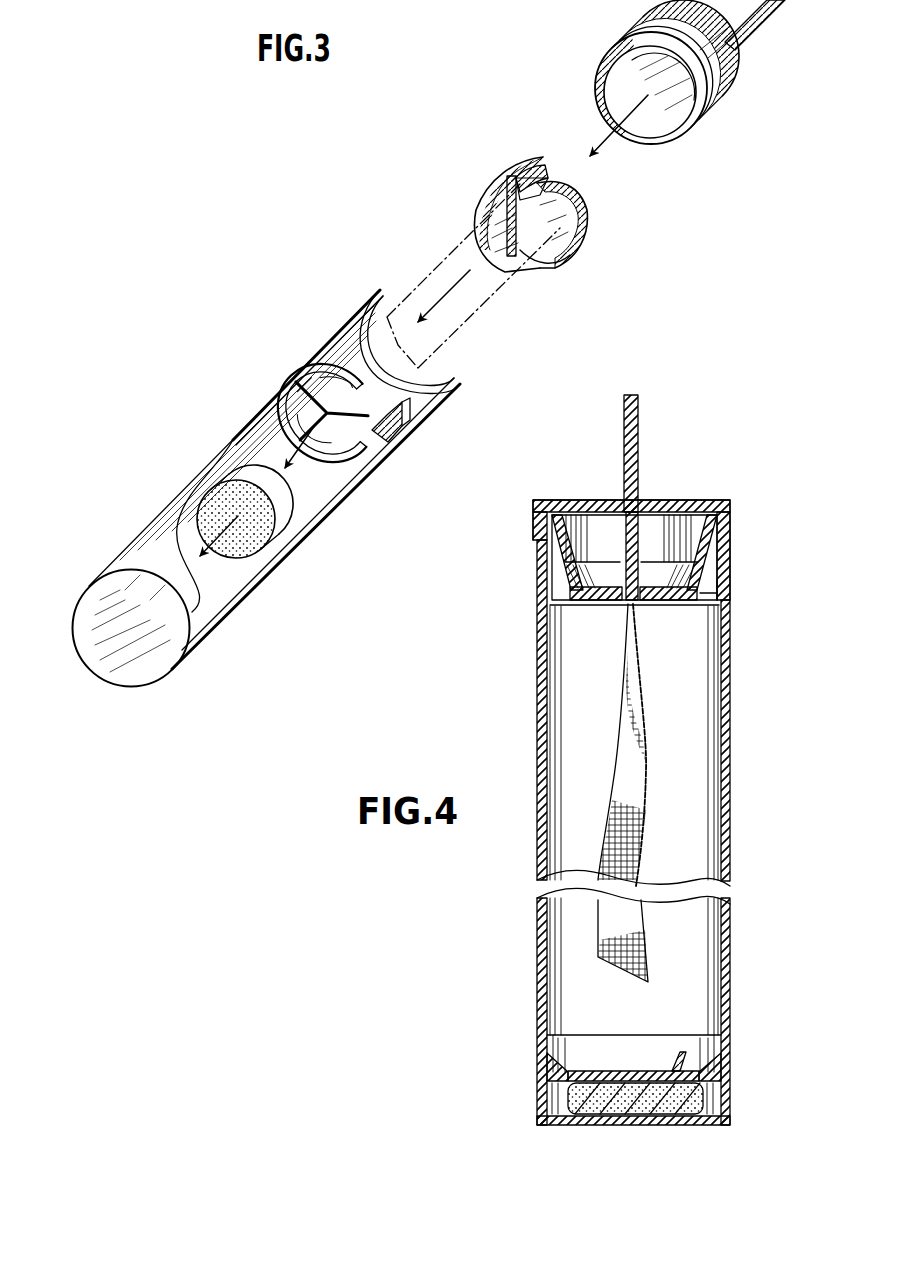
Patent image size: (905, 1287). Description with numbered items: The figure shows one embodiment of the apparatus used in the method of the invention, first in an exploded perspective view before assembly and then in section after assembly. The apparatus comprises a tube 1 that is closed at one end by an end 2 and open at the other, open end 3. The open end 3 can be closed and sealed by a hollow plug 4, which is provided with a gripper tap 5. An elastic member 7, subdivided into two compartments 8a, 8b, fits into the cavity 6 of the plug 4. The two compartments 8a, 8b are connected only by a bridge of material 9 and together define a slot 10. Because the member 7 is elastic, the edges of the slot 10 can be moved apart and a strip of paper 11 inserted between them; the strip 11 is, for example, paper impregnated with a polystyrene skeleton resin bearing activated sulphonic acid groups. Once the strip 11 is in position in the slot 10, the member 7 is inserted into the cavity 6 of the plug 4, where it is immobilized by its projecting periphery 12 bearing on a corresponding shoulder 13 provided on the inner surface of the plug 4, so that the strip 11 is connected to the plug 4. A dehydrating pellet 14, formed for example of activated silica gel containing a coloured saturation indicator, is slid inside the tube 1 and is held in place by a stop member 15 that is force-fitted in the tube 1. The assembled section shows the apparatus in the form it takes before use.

In FIG. 3, the tube 1 is at (338, 514).
In FIG. 4, the tube 1 is at (731, 733).
In FIG. 3, the end 2 is at (112, 650).
In FIG. 4, the end 2 is at (560, 1123).
In FIG. 4, the open end 3 is at (523, 541).
In FIG. 3, the hollow plug 4 is at (668, 95).
In FIG. 4, the hollow plug 4 is at (732, 524).
In FIG. 3, the gripper tap 5 is at (760, 24).
In FIG. 4, the gripper tap 5 is at (638, 416).
In FIG. 3, the cavity 6 is at (647, 140).
In FIG. 3, the elastic member 7 is at (536, 198).
In FIG. 4, the elastic member 7 is at (629, 549).
In FIG. 3, the compartment 8a is at (548, 178).
In FIG. 4, the compartment 8a is at (690, 527).
In FIG. 3, the compartment 8b is at (568, 190).
In FIG. 4, the compartment 8b is at (590, 527).
In FIG. 3, the bridge of material 9 is at (563, 186).
In FIG. 4, the bridge of material 9 is at (636, 525).
In FIG. 3, the slot 10 is at (480, 238).
In FIG. 4, the slot 10 is at (654, 604).
In FIG. 3, the strip of paper 11 is at (482, 304).
In FIG. 4, the strip of paper 11 is at (632, 782).
In FIG. 3, the projecting periphery 12 is at (558, 254).
In FIG. 4, the projecting periphery 12 is at (708, 562).
In FIG. 3, the shoulder 13 is at (602, 94).
In FIG. 4, the shoulder 13 is at (718, 590).
In FIG. 3, the dehydrating pellet 14 is at (268, 566).
In FIG. 4, the dehydrating pellet 14 is at (690, 1096).
In FIG. 3, the stop member 15 is at (403, 427).
In FIG. 4, the stop member 15 is at (726, 1047).